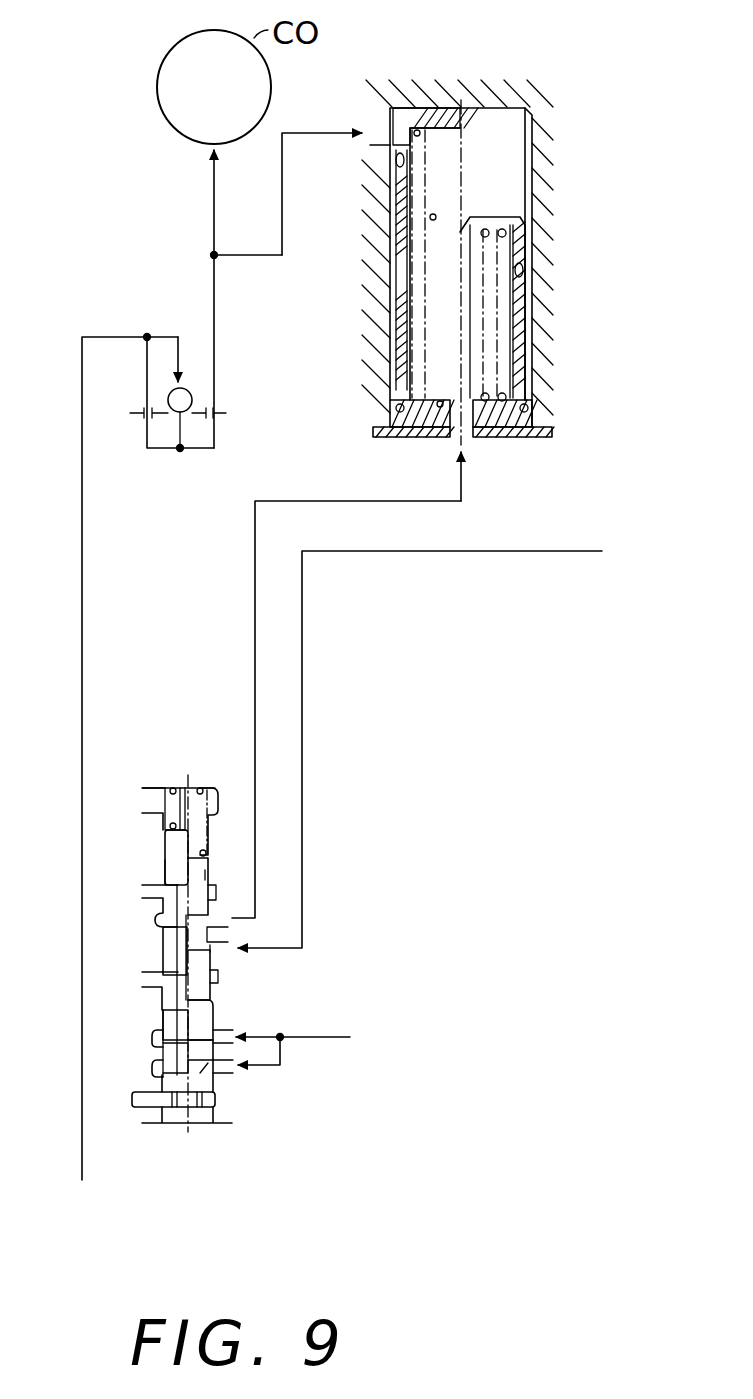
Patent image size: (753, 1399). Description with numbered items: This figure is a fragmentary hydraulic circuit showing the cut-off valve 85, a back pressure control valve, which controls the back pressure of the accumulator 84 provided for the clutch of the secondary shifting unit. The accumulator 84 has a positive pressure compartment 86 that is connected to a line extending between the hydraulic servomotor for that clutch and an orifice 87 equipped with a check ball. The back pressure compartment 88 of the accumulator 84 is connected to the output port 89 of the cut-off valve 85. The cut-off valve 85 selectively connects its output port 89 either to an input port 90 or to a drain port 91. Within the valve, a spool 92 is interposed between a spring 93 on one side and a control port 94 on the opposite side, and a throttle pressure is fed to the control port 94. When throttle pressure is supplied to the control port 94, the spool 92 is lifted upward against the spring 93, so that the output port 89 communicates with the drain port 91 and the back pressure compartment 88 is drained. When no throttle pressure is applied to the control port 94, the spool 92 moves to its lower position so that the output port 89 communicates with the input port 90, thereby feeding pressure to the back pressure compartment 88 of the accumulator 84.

The accumulator 84 is at (565, 140).
The cut-off valve 85 is at (151, 752).
The positive pressure compartment 86 is at (427, 92).
The orifice 87 is at (165, 427).
The back pressure compartment 88 is at (470, 330).
The output port 89 is at (218, 912).
The input port 90 is at (234, 952).
The drain port 91 is at (155, 887).
The spool 92 is at (205, 872).
The spring 93 is at (207, 790).
The control port 94 is at (222, 1078).